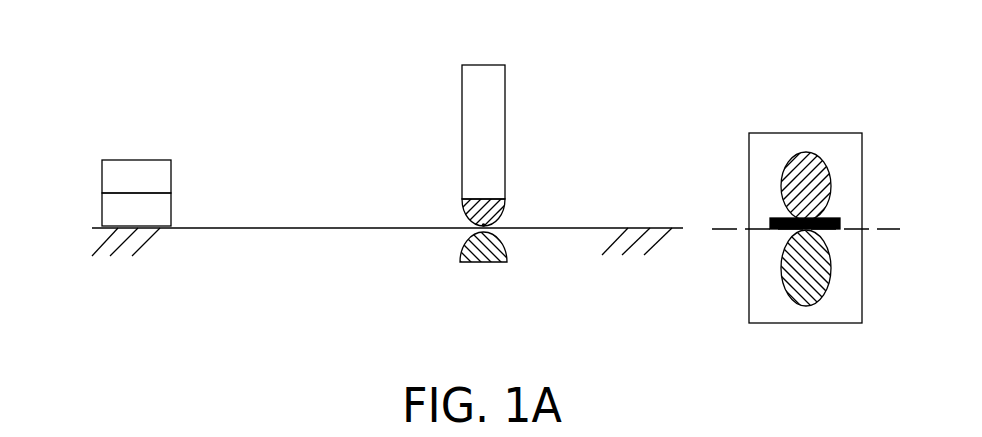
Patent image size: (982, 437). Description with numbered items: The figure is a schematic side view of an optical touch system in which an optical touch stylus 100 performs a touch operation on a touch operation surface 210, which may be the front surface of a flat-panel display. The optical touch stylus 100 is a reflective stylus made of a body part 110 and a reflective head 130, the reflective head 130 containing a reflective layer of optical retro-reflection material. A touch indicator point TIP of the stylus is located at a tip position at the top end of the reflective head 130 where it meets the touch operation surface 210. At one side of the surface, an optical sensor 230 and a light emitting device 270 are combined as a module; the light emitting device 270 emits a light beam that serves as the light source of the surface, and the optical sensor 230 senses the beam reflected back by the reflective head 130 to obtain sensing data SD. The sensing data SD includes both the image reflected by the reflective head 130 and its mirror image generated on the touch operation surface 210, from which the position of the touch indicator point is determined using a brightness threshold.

The optical touch stylus 100 is at (483, 117).
The body part 110 is at (470, 132).
The reflective head 130 is at (465, 208).
The touch indicator point TIP is at (498, 223).
The touch operation surface 210 is at (220, 230).
The optical sensor 230 is at (100, 211).
The light emitting device 270 is at (100, 178).
The sensing data SD is at (749, 153).